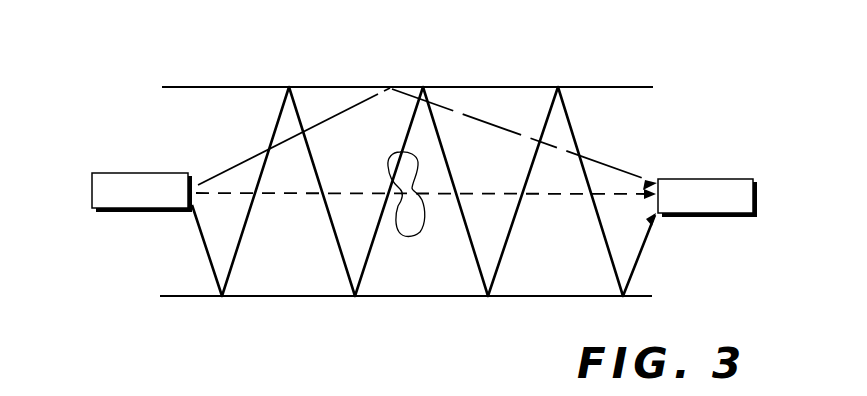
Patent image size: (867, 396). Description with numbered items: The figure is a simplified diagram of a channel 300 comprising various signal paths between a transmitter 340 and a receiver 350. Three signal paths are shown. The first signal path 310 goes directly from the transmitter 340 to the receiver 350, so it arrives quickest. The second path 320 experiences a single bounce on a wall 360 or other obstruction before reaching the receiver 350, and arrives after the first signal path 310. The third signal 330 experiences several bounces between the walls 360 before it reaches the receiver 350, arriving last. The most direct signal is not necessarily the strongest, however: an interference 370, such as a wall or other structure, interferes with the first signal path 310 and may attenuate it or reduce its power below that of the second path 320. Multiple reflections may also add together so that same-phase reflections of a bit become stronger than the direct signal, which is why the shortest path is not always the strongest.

The channel 300 is at (614, 78).
The first signal path 310 is at (296, 194).
The second path 320 is at (245, 161).
The third signal 330 is at (467, 232).
The transmitter 340 is at (119, 173).
The receiver 350 is at (718, 178).
The wall 360 is at (252, 86).
The interference 370 is at (405, 237).